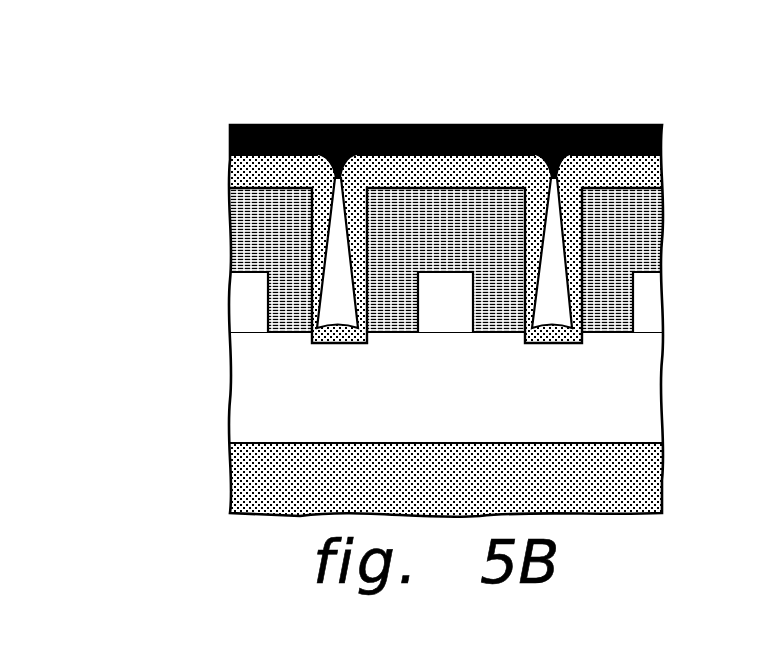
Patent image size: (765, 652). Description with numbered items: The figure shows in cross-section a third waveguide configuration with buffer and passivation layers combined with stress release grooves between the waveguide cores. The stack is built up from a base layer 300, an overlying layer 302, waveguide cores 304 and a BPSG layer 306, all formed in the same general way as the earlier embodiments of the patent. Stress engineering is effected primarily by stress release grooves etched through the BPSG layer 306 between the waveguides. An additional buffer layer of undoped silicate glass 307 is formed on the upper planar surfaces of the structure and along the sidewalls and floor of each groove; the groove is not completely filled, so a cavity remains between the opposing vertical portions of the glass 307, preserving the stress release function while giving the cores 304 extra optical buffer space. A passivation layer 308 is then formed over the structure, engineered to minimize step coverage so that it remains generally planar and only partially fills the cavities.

The substrate layer 300 is at (227, 485).
The buffer layer 302 is at (227, 378).
The waveguide core 304 is at (226, 307).
The BPSG layer 306 is at (227, 237).
The undoped silicate glass buffer layer 307 is at (228, 178).
The passivation layer 308 is at (338, 125).